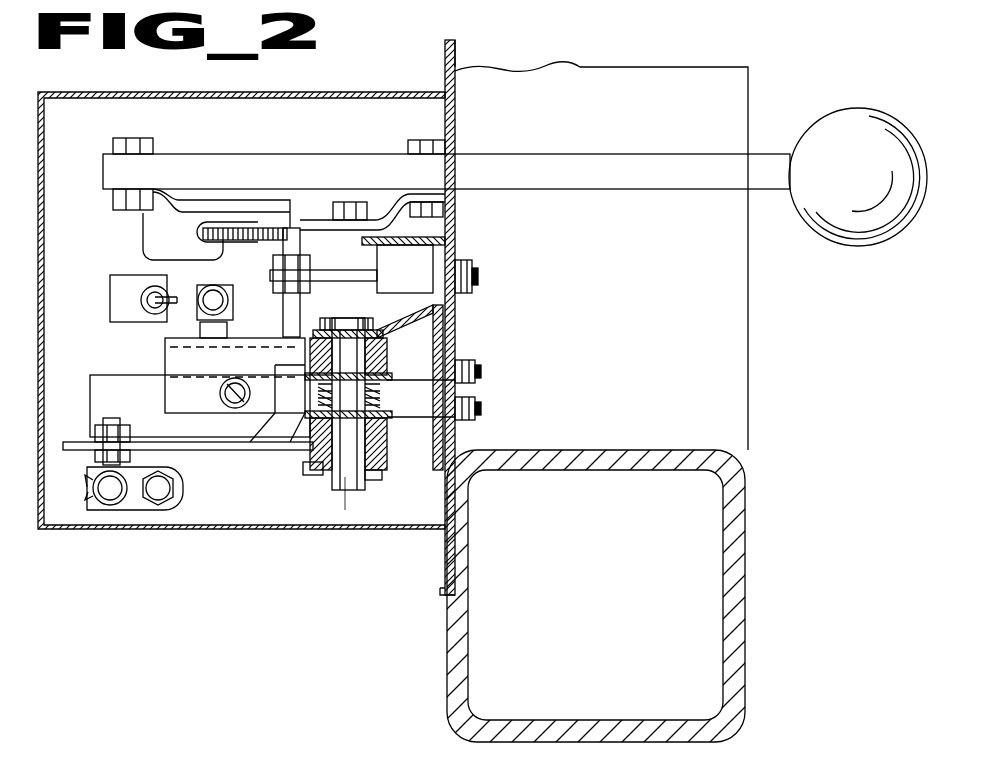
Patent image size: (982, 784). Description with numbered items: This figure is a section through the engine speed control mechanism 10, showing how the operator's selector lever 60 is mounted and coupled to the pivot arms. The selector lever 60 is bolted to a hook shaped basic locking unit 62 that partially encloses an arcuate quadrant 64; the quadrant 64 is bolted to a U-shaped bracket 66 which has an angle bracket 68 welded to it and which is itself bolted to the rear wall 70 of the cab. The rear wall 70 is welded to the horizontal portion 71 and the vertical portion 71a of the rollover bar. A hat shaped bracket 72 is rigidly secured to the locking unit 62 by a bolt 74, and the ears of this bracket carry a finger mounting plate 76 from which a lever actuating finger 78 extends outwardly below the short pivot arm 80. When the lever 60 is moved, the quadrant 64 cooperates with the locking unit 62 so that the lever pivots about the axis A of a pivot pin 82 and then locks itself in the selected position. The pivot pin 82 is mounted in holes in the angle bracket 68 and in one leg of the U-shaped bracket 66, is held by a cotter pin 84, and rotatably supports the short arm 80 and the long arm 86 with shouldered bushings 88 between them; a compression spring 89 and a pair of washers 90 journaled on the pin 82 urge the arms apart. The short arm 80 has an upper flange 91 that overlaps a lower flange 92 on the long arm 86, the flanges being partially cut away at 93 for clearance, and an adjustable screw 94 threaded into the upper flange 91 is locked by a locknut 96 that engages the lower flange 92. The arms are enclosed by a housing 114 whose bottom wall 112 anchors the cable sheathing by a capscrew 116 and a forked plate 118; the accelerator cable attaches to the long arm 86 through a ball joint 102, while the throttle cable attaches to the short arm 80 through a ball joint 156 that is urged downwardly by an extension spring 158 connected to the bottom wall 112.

The engine speed control mechanism 10 is at (566, 56).
The selector lever 60 is at (620, 156).
The hook shaped basic locking unit 62 is at (222, 205).
The arcuate quadrant 64 is at (200, 229).
The U-shaped bracket 66 is at (440, 340).
The angle bracket 68 is at (410, 345).
The rear wall 70 is at (443, 560).
The horizontal portion of rollover bar 71 is at (744, 356).
The vertical portion of rollover bar 71a is at (735, 526).
The hat shaped bracket 72 is at (377, 266).
The bolt 74 is at (352, 207).
The finger mounting plate 76 is at (378, 286).
The lever actuating finger 78 is at (300, 313).
The short pivot arm 80 is at (165, 345).
The pivot pin 82 is at (360, 490).
The cotter pin 84 is at (303, 478).
The long arm 86 is at (108, 377).
The shouldered bushings 88 is at (387, 368).
The compression spring 89 is at (368, 394).
The washers 90 is at (445, 395).
The upper flange 91 is at (198, 409).
The lower flange 92 is at (143, 409).
The cut away 93 is at (277, 423).
The adjustable screw 94 is at (222, 410).
The locknut 96 is at (247, 413).
The ball joint 102 is at (93, 500).
The bottom wall 112 is at (252, 520).
The housing 114 is at (122, 92).
The capscrew 116 is at (158, 505).
The forked plate 118 is at (127, 510).
The ball joint 156 is at (211, 285).
The extension spring 158 is at (150, 290).
The axis A is at (335, 497).